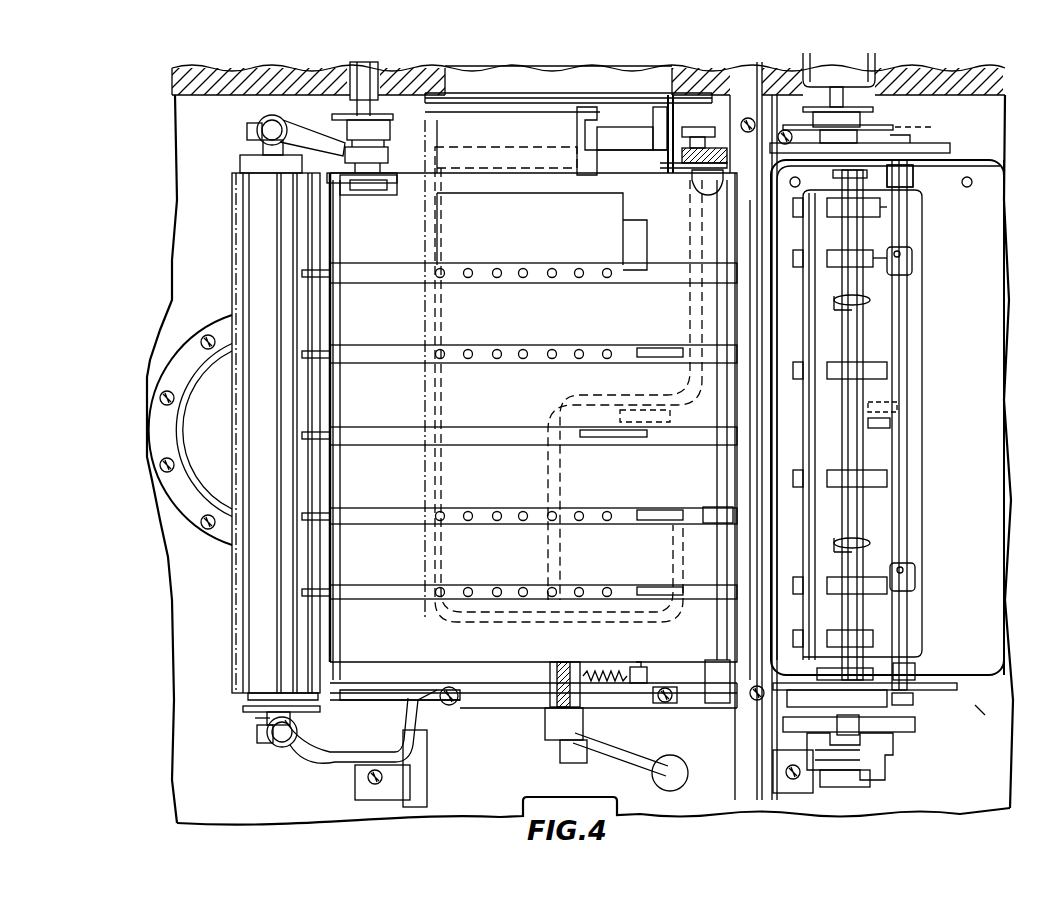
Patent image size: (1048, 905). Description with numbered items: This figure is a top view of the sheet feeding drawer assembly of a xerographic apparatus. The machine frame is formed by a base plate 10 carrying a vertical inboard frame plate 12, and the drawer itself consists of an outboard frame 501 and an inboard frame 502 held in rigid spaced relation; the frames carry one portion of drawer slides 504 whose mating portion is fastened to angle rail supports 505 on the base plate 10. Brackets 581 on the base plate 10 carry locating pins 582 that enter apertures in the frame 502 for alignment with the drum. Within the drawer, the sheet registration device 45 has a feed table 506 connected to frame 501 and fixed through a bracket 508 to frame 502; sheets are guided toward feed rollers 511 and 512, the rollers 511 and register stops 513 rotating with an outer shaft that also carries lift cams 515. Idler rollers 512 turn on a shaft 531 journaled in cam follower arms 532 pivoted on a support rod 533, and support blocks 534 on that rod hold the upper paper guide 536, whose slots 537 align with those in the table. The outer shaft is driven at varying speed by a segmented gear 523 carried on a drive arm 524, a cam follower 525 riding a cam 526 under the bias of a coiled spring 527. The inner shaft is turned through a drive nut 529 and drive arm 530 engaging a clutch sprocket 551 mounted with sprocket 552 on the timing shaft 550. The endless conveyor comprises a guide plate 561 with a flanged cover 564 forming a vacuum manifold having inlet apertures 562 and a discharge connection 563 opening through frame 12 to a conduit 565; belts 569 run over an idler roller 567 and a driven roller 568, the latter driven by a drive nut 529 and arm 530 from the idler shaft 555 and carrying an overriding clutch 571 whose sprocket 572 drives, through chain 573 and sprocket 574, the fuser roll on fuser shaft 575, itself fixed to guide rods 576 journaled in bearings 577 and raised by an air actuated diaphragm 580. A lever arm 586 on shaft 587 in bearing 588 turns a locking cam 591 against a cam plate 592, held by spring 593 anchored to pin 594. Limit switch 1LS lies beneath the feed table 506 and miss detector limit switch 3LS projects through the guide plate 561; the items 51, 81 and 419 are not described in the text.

The base plate 10 is at (175, 141).
The inboard frame plate 12 is at (177, 80).
The sheet registration device 45 is at (998, 736).
The vertical post 51 is at (744, 115).
The flange disk 81 is at (348, 116).
The bracket 419 is at (937, 125).
The outboard frame 501 is at (930, 693).
The inboard frame 502 is at (943, 142).
The drawer slides 504 is at (745, 737).
The angle rail supports 505 is at (355, 785).
The feed table 506 is at (1008, 372).
The bracket 508 is at (1022, 170).
The feed rollers 511 is at (823, 290).
The feed rollers 512 is at (829, 424).
The register stops 513 is at (835, 380).
The lift cams 515 is at (825, 222).
The segmented gear 523 is at (903, 750).
The drive arm 524 is at (850, 790).
The cam follower 525 is at (838, 722).
The cam 526 is at (927, 724).
The coiled spring 527 is at (812, 752).
The drive nut 529 is at (395, 177).
The drive arm 530 is at (450, 114).
The shaft 531 is at (840, 443).
The cam follower arms 532 is at (927, 172).
The support rod 533 is at (908, 537).
The support blocks 534 is at (912, 258).
The upper paper guide 536 is at (922, 373).
The slots 537 is at (830, 250).
The timing shaft 550 is at (820, 85).
The clutch sprocket 551 is at (895, 125).
The sprocket 552 is at (866, 110).
The idler shaft 555 is at (375, 83).
The guide plate 561 is at (455, 452).
The inlet apertures 562 is at (594, 293).
The discharge connection 563 is at (520, 110).
The flanged cover 564 is at (680, 304).
The conduit 565 is at (592, 64).
The idler roller 567 is at (730, 500).
The driven roller 568 is at (337, 276).
The belts 569 is at (330, 390).
The overriding clutch 571 is at (360, 738).
The sprocket 572 is at (440, 688).
The chain 573 is at (255, 718).
The sprocket 574 is at (245, 703).
The fuser shaft 575 is at (263, 148).
The guide rods 576 is at (247, 132).
The bearings 577 is at (265, 124).
The air actuated diaphragm 580 is at (148, 470).
The brackets 581 is at (460, 140).
The locating pins 582 is at (640, 150).
The lever arm 586 is at (648, 754).
The shaft 587 is at (555, 670).
The bearing 588 is at (542, 696).
The locking cam 591 is at (602, 660).
The cam plate 592 is at (598, 718).
The spring 593 is at (645, 660).
The pin 594 is at (652, 685).
The limit switch 1LS is at (895, 395).
The miss detector limit switch 3LS is at (690, 405).